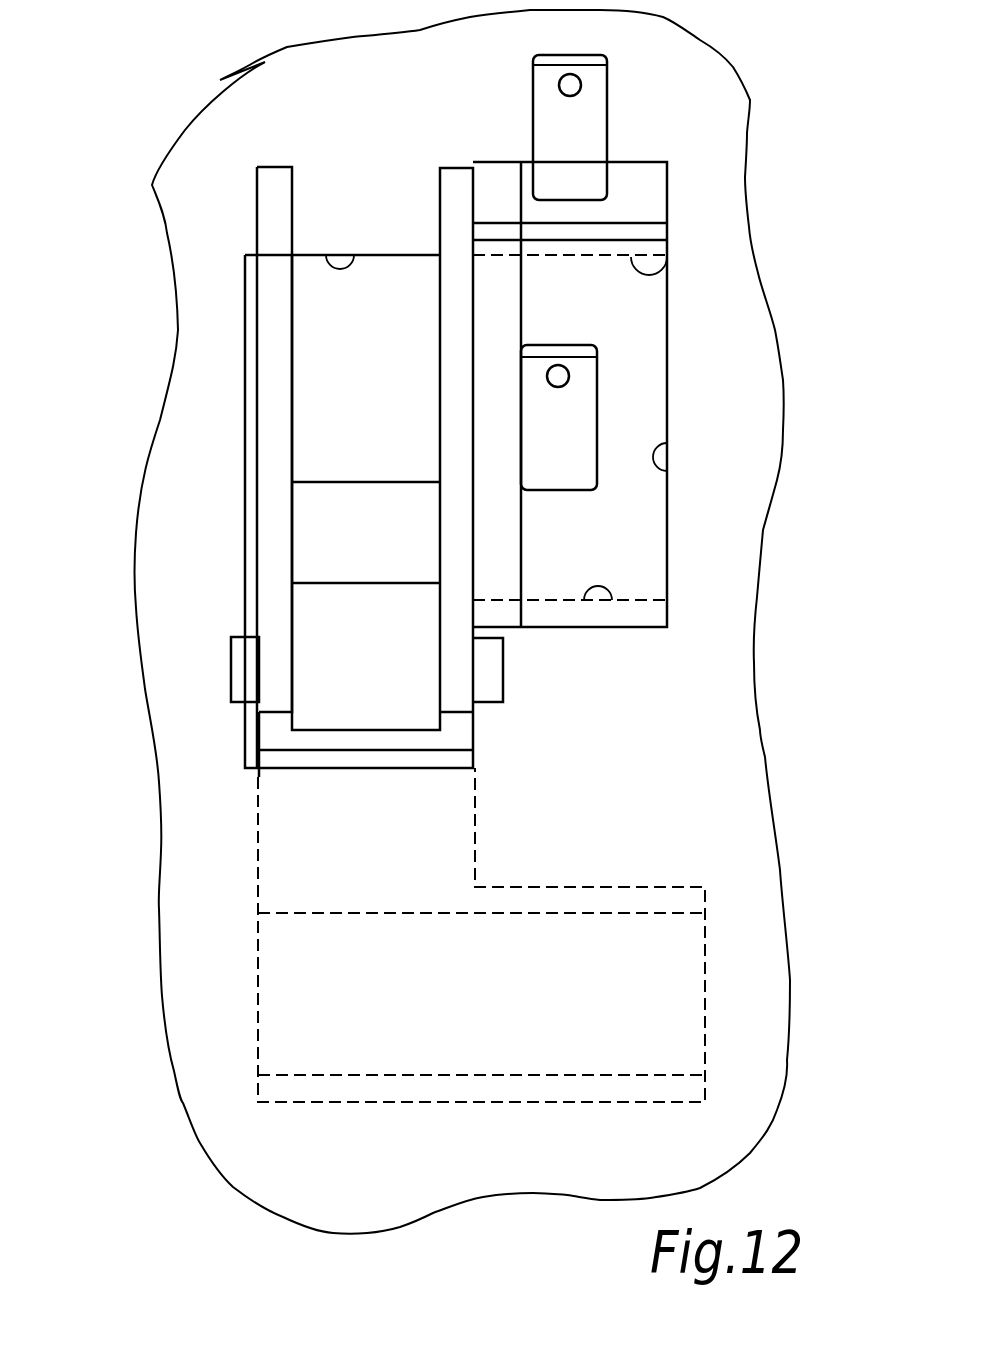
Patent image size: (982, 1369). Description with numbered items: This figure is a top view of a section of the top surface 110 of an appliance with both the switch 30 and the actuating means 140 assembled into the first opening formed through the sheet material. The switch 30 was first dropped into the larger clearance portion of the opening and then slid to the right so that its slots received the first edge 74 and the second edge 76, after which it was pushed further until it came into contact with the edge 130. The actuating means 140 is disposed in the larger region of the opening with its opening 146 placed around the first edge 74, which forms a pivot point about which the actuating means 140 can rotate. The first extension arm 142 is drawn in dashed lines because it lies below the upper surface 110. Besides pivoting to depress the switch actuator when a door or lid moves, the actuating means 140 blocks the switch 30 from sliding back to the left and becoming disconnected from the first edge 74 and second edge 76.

The top surface 110 is at (270, 113).
The opening 146 is at (270, 208).
The actuating means 140 is at (313, 428).
The switch 30 is at (630, 344).
The first edge 74 is at (355, 256).
The edge 130 is at (667, 471).
The second edge 76 is at (604, 589).
The first extension arm 142 is at (303, 987).